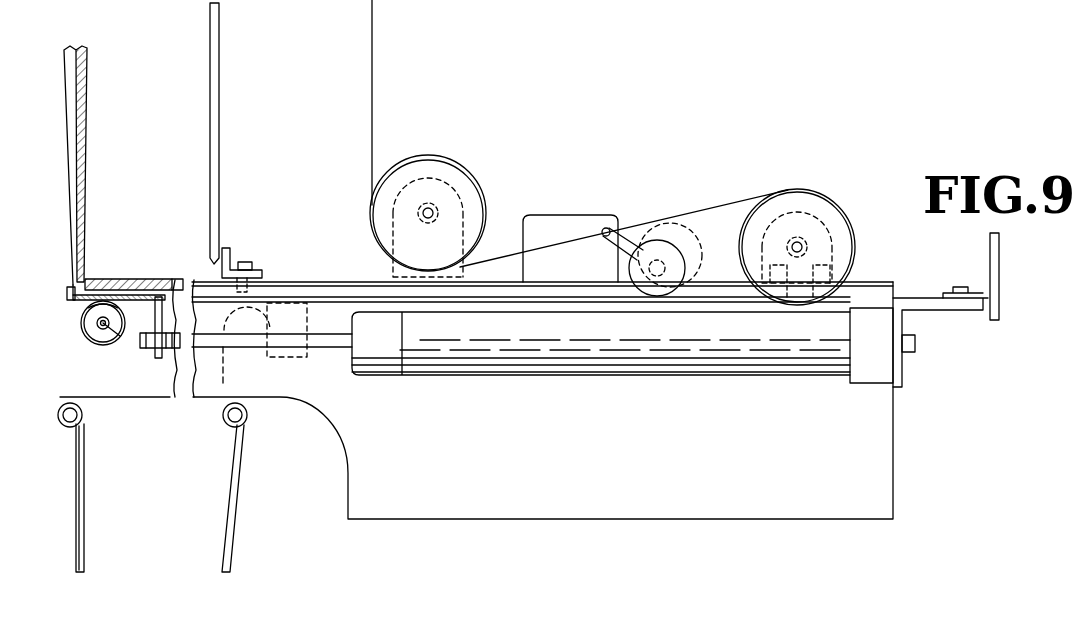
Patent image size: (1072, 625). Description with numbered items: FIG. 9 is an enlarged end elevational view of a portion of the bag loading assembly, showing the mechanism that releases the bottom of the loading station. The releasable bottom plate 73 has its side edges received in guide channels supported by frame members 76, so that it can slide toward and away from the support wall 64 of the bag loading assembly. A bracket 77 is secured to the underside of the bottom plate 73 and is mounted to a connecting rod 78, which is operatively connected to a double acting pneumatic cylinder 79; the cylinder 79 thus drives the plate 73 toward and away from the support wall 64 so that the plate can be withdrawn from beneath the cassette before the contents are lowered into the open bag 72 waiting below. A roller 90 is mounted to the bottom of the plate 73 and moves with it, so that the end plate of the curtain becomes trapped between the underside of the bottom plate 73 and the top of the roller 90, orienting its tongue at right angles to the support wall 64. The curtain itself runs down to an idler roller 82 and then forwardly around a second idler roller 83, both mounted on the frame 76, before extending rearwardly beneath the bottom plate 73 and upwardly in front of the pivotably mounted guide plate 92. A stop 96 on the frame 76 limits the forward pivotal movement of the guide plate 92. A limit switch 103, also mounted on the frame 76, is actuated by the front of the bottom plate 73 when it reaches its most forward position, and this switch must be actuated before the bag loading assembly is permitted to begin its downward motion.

The support wall 64 is at (83, 118).
The guide plate 92 is at (217, 121).
The bottom plate 73 is at (118, 279).
The bracket 77 is at (153, 300).
The roller 90 is at (113, 346).
The stop 96 is at (232, 262).
The connecting rod 78 is at (272, 349).
The idler roller 82 is at (480, 193).
The limit switch 103 is at (667, 240).
The second idler roller 83 is at (838, 207).
The double acting pneumatic cylinder 79 is at (668, 377).
The frame member 76 is at (614, 489).
The bag 72 is at (231, 518).